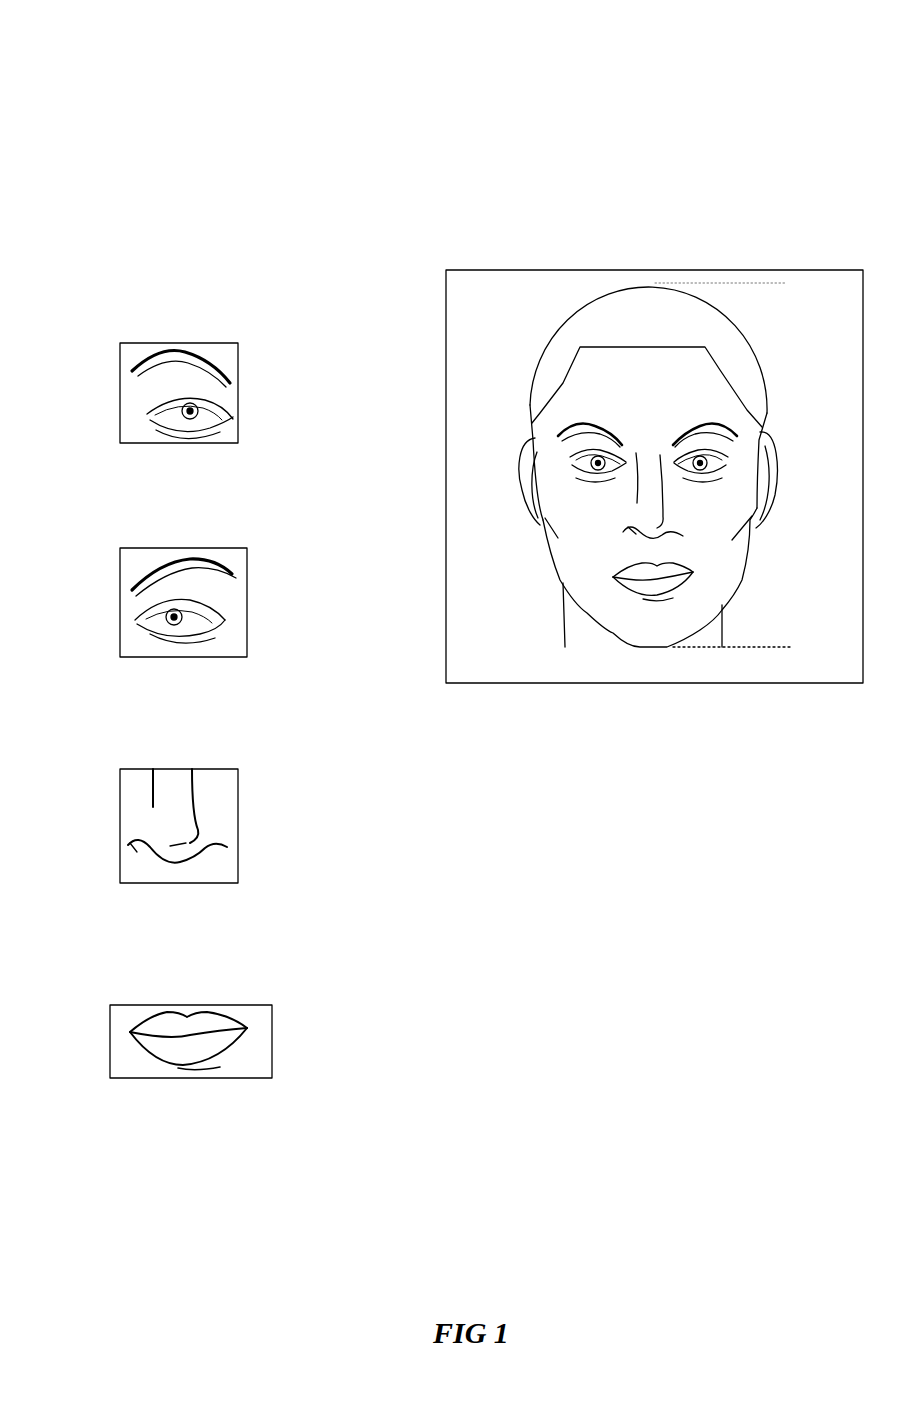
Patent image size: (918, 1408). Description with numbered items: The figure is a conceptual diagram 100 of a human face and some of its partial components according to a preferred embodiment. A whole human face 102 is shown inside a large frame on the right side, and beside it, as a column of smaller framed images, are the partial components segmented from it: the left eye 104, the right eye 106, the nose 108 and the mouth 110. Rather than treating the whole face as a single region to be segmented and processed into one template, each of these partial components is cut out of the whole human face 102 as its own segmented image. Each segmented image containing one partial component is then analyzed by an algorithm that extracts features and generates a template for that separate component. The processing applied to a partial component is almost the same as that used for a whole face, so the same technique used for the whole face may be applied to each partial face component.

The facial feature detection system / process overview 100 is at (142, 100).
The whole human face 102 is at (784, 272).
The left eye 104 is at (175, 343).
The right eye 106 is at (178, 547).
The nose 108 is at (202, 768).
The mouth 110 is at (215, 1003).